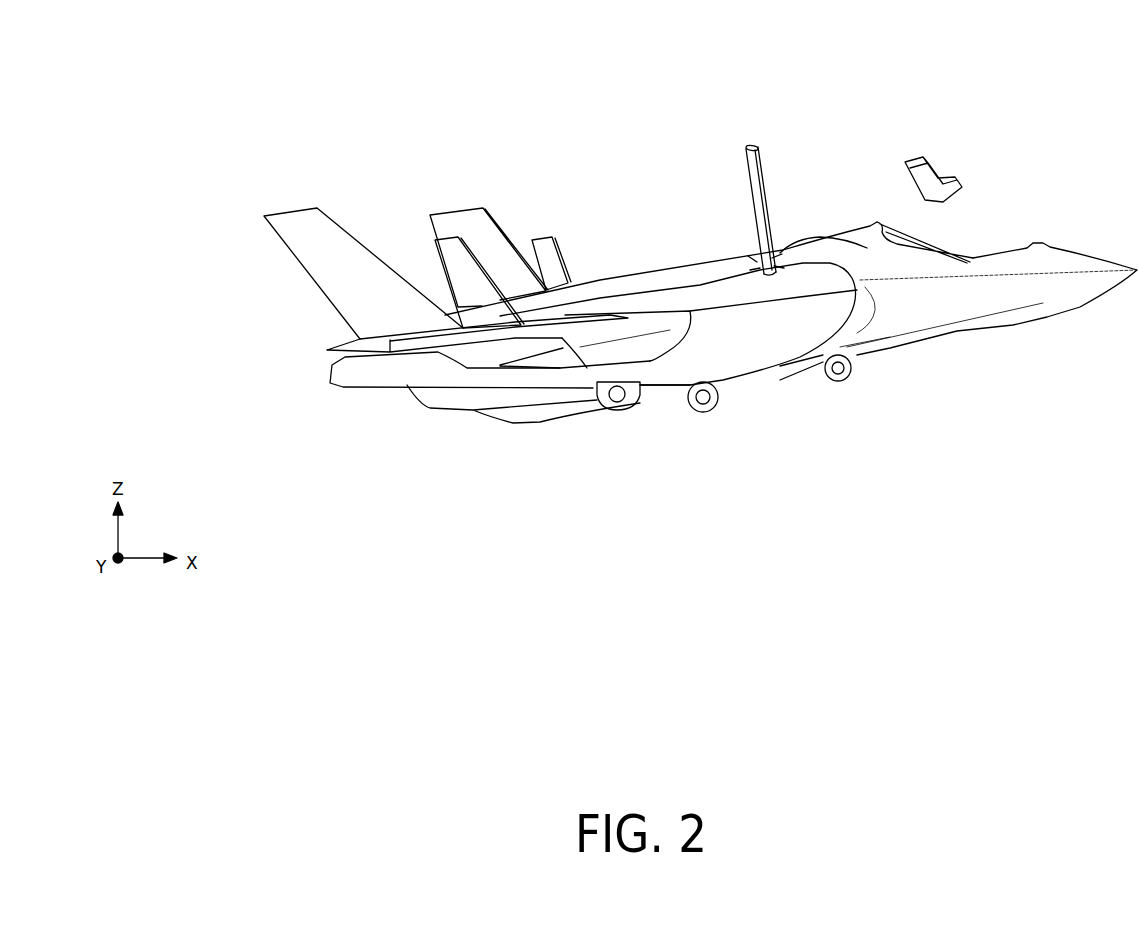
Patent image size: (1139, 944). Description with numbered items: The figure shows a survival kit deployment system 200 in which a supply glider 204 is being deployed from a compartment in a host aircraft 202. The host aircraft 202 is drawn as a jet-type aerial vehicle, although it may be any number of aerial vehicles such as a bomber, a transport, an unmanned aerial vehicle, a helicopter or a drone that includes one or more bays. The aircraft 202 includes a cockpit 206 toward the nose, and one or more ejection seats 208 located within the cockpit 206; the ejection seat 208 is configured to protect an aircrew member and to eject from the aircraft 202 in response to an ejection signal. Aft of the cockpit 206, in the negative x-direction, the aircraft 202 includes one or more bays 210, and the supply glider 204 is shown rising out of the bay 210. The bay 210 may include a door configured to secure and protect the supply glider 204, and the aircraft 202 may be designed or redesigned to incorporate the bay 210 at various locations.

The survival kit deployment system 200 is at (338, 113).
The host aircraft 202 is at (1017, 308).
The supply glider 204 is at (749, 192).
The cockpit 206 is at (1024, 211).
The ejection seat 208 is at (913, 162).
The bay 210 is at (708, 239).